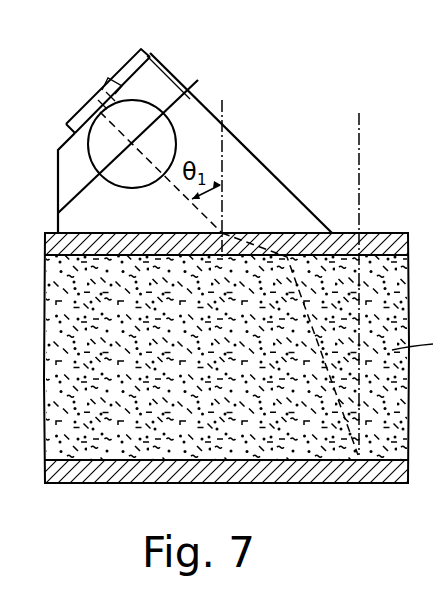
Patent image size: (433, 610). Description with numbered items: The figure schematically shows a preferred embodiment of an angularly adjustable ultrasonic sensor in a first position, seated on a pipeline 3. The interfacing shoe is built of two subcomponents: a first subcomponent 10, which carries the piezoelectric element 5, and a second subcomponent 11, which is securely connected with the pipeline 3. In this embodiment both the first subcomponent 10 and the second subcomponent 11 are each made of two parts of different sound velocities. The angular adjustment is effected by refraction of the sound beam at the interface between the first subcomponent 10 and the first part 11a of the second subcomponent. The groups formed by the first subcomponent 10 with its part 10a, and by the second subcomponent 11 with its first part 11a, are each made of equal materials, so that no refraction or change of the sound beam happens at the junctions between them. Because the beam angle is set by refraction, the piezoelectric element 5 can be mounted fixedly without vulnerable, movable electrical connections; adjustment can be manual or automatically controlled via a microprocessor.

The pipeline 3 is at (347, 478).
The piezoelectric element 5 is at (110, 86).
The first subcomponent 10 is at (73, 173).
The part of the first subcomponent 10a is at (132, 130).
The second subcomponent 11 is at (261, 205).
The first part of the second subcomponent 11a is at (196, 100).